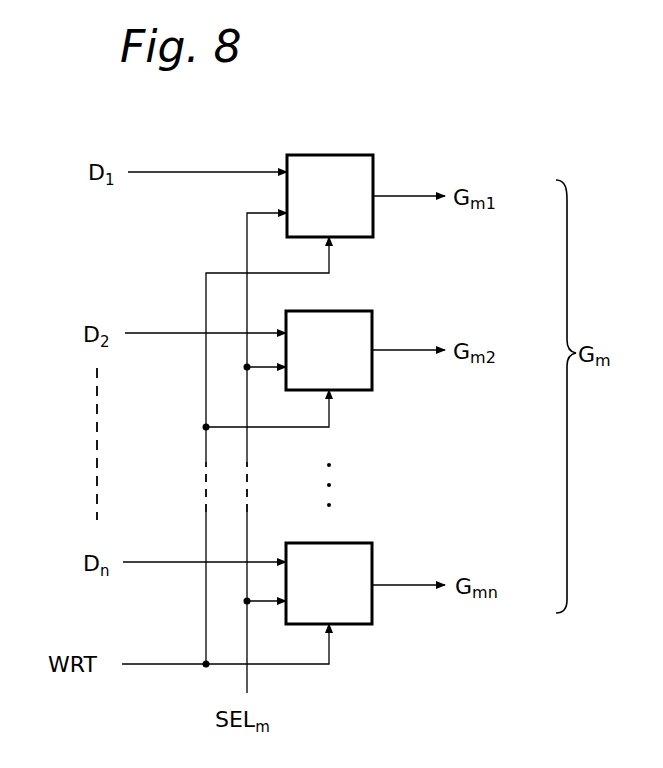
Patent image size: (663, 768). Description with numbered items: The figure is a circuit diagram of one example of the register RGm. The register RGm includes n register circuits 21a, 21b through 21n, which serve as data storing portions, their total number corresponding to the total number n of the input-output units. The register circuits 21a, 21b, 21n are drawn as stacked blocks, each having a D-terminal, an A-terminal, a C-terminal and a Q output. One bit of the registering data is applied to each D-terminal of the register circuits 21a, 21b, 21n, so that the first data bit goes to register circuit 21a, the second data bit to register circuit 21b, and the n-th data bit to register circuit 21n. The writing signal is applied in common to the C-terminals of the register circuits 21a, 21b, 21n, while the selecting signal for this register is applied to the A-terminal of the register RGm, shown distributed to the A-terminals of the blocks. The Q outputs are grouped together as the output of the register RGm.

The register RGm is at (362, 134).
The register circuit 21a is at (373, 228).
The register circuit 21b is at (372, 322).
The register circuit 21n is at (372, 552).